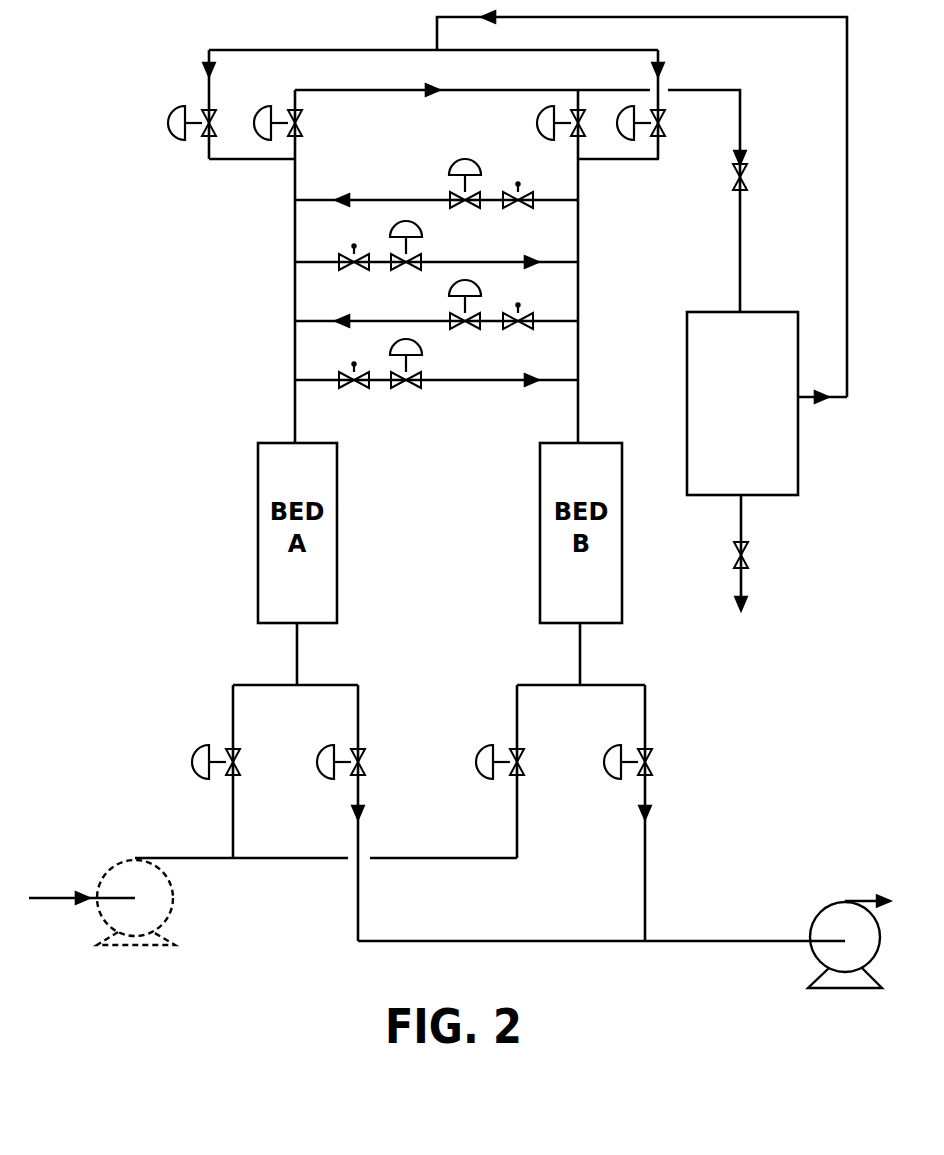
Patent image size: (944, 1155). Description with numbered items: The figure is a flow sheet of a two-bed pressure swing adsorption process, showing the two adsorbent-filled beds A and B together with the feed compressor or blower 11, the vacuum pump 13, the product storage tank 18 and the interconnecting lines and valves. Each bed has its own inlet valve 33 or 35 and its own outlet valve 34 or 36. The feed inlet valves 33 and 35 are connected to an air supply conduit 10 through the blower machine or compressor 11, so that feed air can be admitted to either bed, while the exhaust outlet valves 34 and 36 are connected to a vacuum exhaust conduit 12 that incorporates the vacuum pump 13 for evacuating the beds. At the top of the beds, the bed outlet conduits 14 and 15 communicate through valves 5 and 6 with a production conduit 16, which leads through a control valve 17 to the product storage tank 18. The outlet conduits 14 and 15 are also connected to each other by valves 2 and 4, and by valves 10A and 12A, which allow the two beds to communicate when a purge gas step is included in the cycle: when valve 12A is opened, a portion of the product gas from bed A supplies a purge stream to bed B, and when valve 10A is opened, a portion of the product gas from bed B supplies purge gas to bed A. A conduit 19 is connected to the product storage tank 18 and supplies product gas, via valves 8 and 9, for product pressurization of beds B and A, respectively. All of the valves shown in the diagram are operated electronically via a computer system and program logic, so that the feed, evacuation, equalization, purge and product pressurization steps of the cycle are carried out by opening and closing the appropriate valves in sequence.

The valve 2 is at (436, 198).
The valve 4 is at (436, 254).
The valve 5 is at (285, 123).
The valve 6 is at (568, 123).
The valve 8 is at (648, 104).
The valve 9 is at (198, 104).
The air supply conduit 10 is at (72, 910).
The valve 10A is at (436, 317).
The feed compressor 11 is at (136, 902).
The vacuum exhaust conduit 12 is at (601, 925).
The valve 12A is at (436, 375).
The vacuum pump 13 is at (849, 942).
The bed outlet conduit 14 is at (311, 266).
The bed outlet conduit 15 is at (595, 266).
The production conduit 16 is at (520, 199).
The control valve 17 is at (756, 177).
The product storage tank 18 is at (767, 461).
The conduit 19 is at (660, 205).
The inlet valve 33 is at (230, 771).
The outlet valve 34 is at (355, 813).
The inlet valve 35 is at (514, 771).
The outlet valve 36 is at (642, 813).